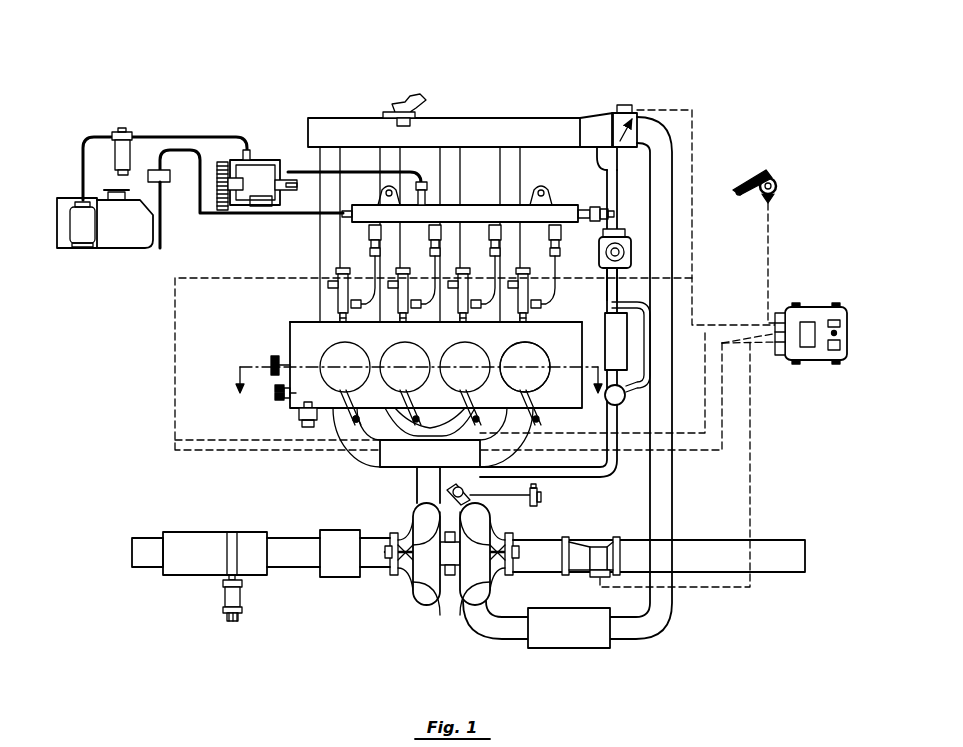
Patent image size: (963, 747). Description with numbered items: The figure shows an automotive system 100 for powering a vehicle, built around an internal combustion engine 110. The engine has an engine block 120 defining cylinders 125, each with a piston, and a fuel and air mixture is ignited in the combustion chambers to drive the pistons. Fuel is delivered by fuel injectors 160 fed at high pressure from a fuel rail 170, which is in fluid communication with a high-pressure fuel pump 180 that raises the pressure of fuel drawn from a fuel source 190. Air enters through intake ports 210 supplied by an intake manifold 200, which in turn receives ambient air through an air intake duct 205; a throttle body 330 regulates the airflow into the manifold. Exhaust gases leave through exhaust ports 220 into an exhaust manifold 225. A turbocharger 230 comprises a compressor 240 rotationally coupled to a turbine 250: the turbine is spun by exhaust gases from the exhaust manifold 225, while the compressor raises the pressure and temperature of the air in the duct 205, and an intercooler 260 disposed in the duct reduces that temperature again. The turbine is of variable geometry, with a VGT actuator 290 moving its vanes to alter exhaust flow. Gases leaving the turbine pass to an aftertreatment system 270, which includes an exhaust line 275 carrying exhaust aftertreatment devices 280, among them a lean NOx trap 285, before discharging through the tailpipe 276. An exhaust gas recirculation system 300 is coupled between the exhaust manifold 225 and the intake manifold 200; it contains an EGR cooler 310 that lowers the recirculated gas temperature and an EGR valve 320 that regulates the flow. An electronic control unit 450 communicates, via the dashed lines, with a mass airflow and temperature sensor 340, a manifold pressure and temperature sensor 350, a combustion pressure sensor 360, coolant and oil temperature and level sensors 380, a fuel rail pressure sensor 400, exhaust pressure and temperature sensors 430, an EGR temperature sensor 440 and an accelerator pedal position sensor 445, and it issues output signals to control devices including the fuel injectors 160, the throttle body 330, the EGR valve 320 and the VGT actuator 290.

The automotive system 100 is at (229, 102).
The internal combustion engine 110 is at (536, 104).
The engine block 120 is at (289, 330).
The cylinder 125 is at (553, 350).
The fuel injector 160 is at (345, 307).
The fuel rail 170 is at (372, 217).
The high-pressure fuel pump 180 is at (265, 160).
The fuel source 190 is at (121, 238).
The intake manifold 200 is at (453, 135).
The air intake duct 205 is at (779, 550).
The intake port 210 is at (330, 323).
The exhaust port 220 is at (343, 411).
The exhaust manifold 225 is at (407, 460).
The turbocharger 230 is at (422, 615).
The compressor 240 is at (477, 579).
The turbine 250 is at (423, 578).
The intercooler 260 is at (592, 633).
The aftertreatment system 270 is at (231, 516).
The exhaust line 275 is at (288, 550).
The tailpipe 276 is at (143, 553).
The exhaust aftertreatment device 280 is at (337, 567).
The lean NOx trap 285 is at (253, 553).
The VGT actuator 290 is at (464, 494).
The exhaust gas recirculation system 300 is at (588, 485).
The EGR cooler 310 is at (617, 348).
The EGR valve 320 is at (624, 231).
The throttle body 330 is at (626, 104).
The mass airflow and temperature sensor 340 is at (590, 578).
The manifold pressure and temperature sensor 350 is at (396, 110).
The combustion pressure sensor 360 is at (354, 424).
The coolant and oil temperature and level sensors 380 is at (302, 414).
The fuel rail pressure sensor 400 is at (610, 210).
The exhaust pressure and temperature sensors 430 is at (230, 622).
The EGR temperature sensor 440 is at (621, 277).
The accelerator pedal position sensor 445 is at (770, 169).
The electronic control unit 450 is at (815, 307).